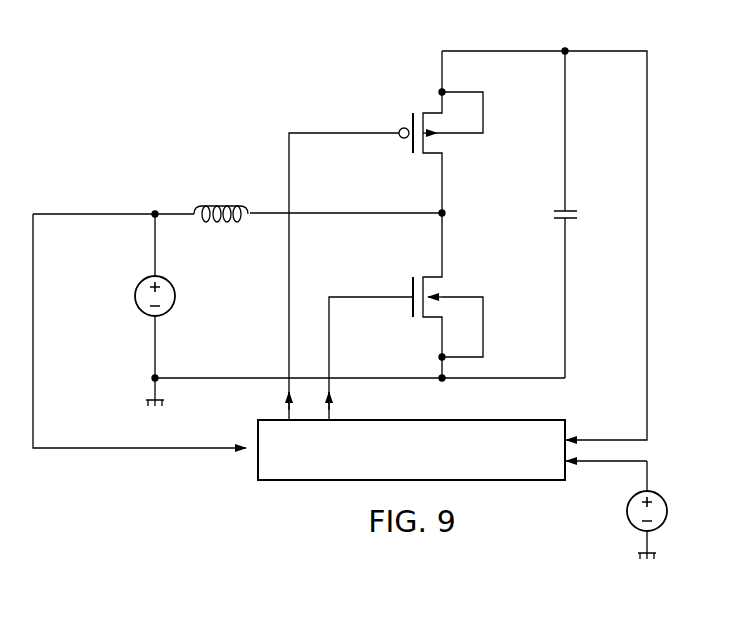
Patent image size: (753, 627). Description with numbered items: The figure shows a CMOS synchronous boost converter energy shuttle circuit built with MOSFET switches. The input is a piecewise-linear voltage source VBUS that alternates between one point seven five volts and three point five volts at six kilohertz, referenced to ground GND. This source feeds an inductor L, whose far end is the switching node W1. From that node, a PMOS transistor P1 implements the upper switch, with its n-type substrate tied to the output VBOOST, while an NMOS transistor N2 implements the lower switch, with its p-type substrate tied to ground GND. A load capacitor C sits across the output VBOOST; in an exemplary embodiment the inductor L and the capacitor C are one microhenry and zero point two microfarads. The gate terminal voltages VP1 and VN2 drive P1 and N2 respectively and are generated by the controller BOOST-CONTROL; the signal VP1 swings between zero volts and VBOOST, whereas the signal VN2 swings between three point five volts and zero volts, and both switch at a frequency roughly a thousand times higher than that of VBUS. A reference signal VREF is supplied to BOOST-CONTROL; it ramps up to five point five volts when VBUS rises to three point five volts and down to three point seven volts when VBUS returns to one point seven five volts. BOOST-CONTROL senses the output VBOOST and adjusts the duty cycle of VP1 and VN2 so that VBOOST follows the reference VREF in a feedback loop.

The output voltage VBOOST is at (554, 228).
The PMOS transistor P1 is at (441, 132).
The gate terminal voltage of P1 VP1 is at (344, 259).
The switching node W1 is at (364, 217).
The NMOS transistor N2 is at (445, 295).
The gate terminal voltage of N2 VN2 is at (371, 342).
The load capacitor C is at (554, 214).
The inductor L is at (221, 202).
The piecewise-linear voltage source VBUS is at (113, 294).
The ground GND is at (403, 482).
The controller BOOST-CONTROL is at (411, 450).
The reference signal VREF is at (641, 497).